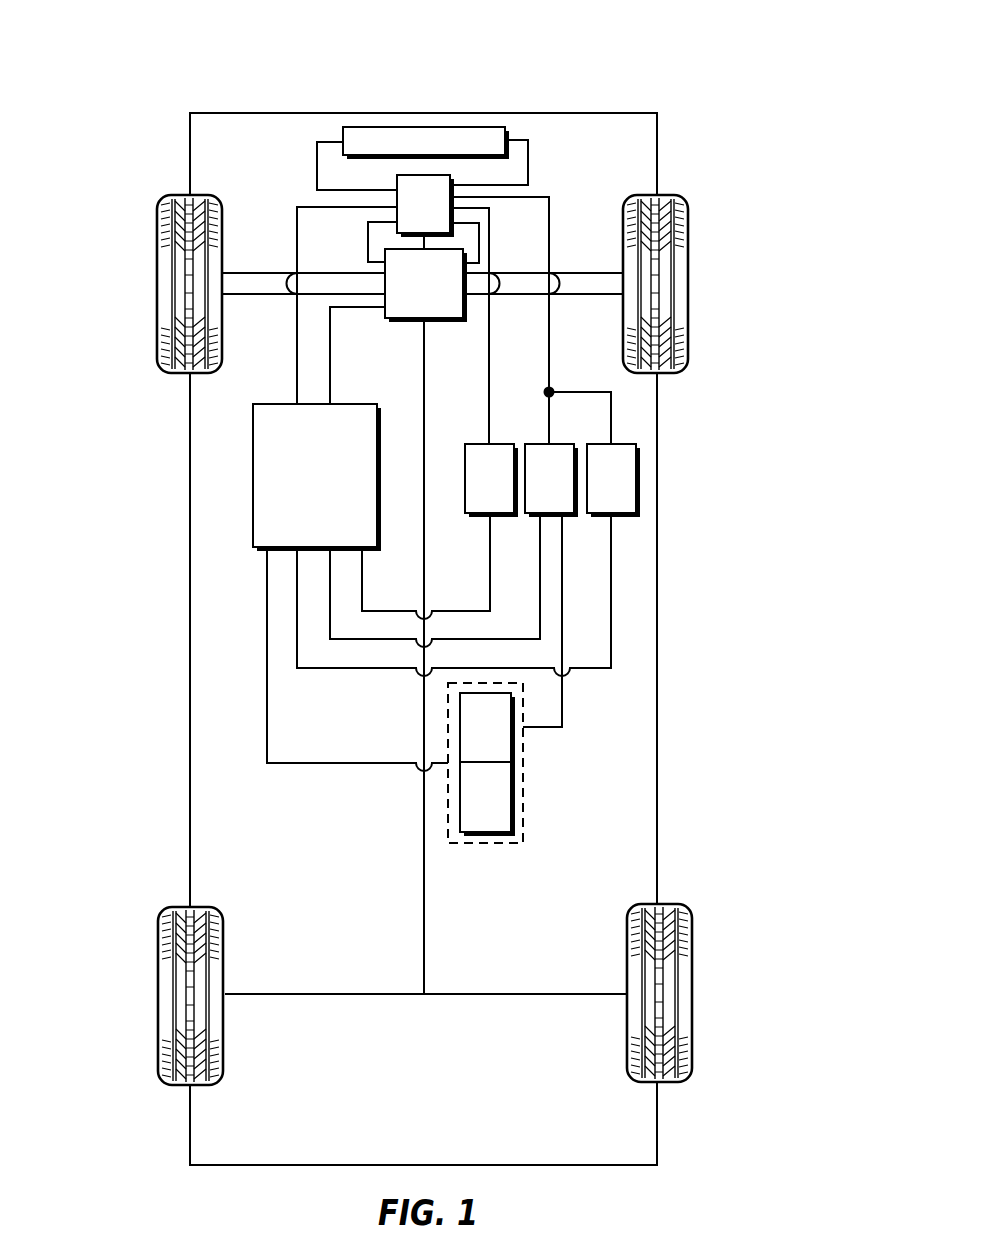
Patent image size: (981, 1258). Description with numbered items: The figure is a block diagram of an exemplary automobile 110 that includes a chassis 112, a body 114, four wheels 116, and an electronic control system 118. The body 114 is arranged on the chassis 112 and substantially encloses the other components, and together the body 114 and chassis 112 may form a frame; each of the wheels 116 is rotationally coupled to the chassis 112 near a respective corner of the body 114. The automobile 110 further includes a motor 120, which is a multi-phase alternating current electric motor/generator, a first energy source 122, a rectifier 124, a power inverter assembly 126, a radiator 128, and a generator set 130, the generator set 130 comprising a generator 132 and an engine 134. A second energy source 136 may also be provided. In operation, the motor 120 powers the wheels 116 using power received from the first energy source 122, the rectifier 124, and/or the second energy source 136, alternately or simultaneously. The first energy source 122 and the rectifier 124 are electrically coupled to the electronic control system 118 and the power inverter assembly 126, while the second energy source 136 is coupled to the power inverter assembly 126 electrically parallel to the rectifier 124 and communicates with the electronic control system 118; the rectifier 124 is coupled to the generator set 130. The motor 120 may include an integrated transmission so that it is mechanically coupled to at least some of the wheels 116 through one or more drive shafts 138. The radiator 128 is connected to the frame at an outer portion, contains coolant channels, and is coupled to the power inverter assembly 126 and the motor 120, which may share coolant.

The automobile 110 is at (424, 584).
The chassis 112 is at (424, 877).
The body 114 is at (200, 477).
The wheels 116 is at (155, 253).
The electronic control system 118 is at (297, 484).
The motor 120 is at (406, 299).
The first energy source 122 is at (472, 493).
The rectifier 124 is at (532, 493).
The power inverter assembly 126 is at (406, 220).
The radiator 128 is at (375, 127).
The generator set 130 is at (530, 763).
The generator 132 is at (467, 739).
The engine 134 is at (467, 809).
The second energy source 136 is at (593, 493).
The drive shafts 138 is at (605, 272).